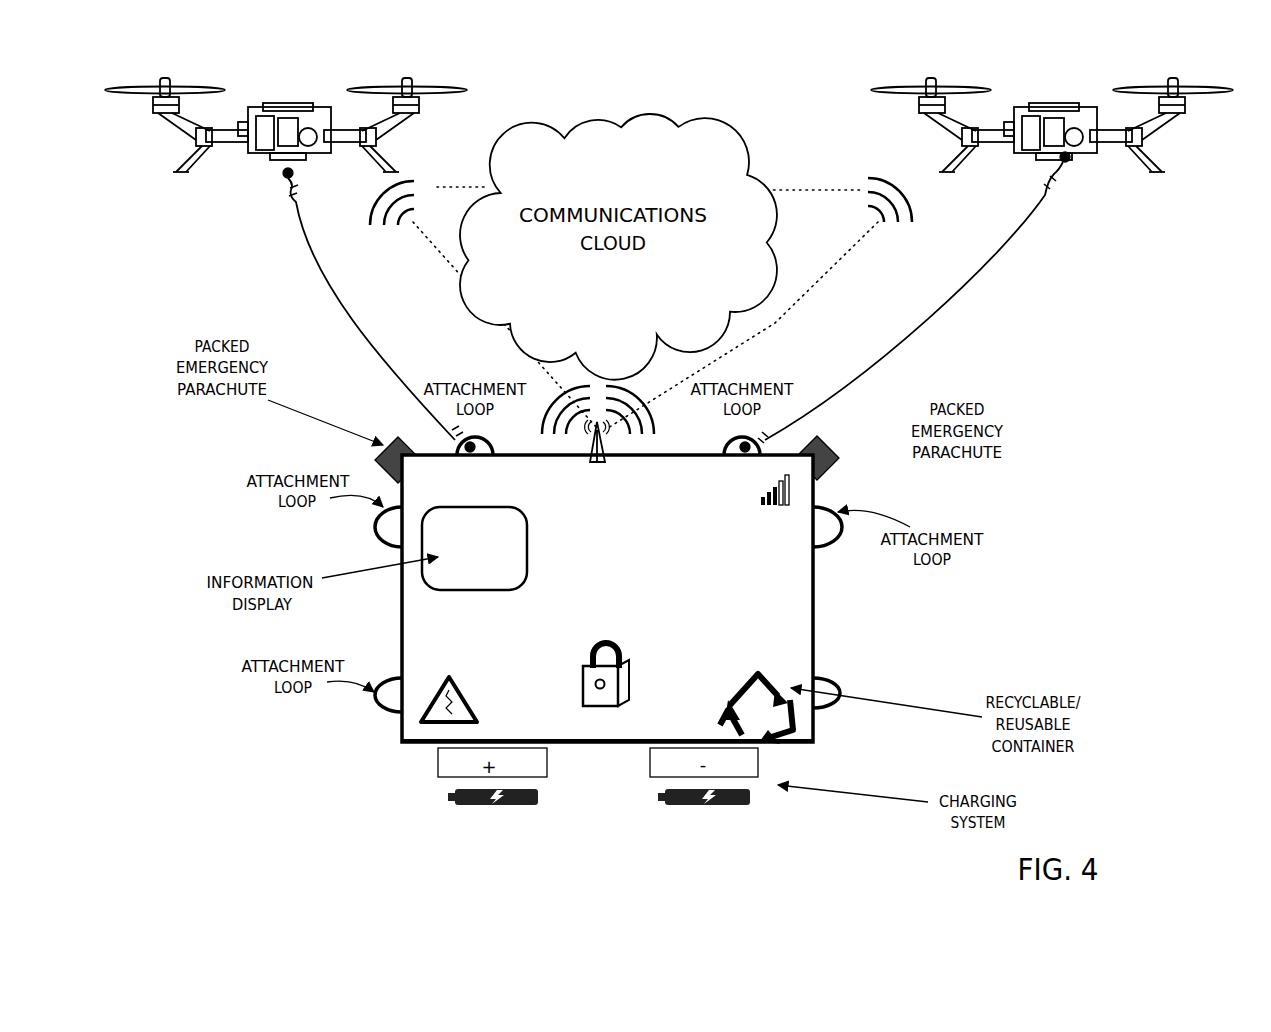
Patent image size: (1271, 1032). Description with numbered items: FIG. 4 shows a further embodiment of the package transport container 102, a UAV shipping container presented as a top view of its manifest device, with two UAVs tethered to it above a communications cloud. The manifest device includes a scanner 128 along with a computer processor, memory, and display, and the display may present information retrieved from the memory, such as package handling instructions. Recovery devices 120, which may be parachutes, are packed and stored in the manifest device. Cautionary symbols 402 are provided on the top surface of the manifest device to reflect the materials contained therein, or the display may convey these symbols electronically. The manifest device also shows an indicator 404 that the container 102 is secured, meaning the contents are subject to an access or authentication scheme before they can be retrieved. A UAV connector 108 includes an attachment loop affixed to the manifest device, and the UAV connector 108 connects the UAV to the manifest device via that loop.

The package transport container 102 is at (1024, 559).
The UAV connector 108 is at (878, 368).
The recovery device 120 is at (832, 448).
The scanner 128 is at (433, 465).
The cautionary symbol 402 is at (423, 720).
The indicator 404 is at (637, 672).